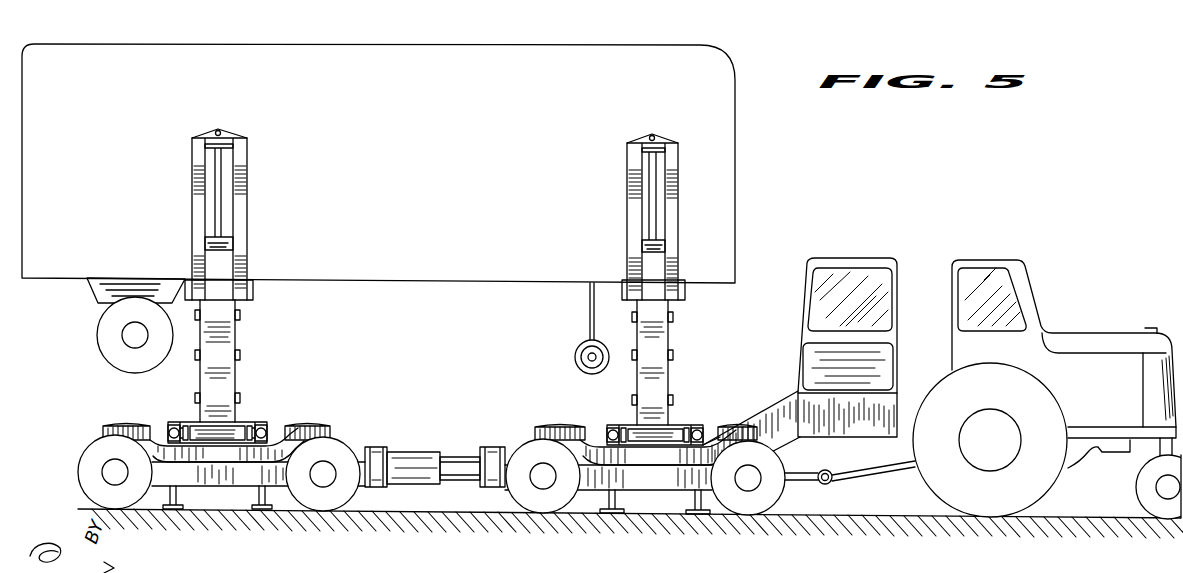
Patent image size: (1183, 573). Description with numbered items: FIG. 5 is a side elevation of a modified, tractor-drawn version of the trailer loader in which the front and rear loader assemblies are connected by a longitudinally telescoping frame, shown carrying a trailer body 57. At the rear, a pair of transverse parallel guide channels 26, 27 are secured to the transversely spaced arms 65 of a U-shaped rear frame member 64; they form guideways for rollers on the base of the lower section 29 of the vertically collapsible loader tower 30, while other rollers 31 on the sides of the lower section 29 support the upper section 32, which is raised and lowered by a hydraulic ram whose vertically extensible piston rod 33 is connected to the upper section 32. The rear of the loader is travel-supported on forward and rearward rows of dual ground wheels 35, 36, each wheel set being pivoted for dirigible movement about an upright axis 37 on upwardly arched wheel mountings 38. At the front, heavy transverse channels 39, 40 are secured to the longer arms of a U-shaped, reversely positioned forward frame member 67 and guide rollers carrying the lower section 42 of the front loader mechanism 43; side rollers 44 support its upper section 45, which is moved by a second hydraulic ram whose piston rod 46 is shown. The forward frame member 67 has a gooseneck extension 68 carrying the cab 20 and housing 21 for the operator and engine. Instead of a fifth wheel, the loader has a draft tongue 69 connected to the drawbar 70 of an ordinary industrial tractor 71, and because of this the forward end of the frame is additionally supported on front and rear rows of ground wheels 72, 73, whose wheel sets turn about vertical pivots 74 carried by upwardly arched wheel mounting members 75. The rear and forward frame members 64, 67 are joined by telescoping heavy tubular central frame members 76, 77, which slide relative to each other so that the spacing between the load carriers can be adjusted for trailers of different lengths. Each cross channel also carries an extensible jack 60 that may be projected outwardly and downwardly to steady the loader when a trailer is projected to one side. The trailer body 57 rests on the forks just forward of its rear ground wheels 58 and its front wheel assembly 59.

The cab 20 is at (855, 260).
The housing 21 is at (880, 343).
The guide channel 26 is at (246, 425).
The guide channel 27 is at (182, 421).
The lower section 29 is at (232, 380).
The loader tower 30 is at (250, 255).
The rollers 31 is at (228, 350).
The upper section 32 is at (245, 213).
The piston rod 33 is at (222, 190).
The ground wheels 35 is at (340, 444).
The ground wheels 36 is at (93, 447).
The upright axis 37 is at (116, 426).
The wheel mountings 38 is at (292, 429).
The channel 39 is at (733, 436).
The channel 40 is at (630, 424).
The lower section 42 is at (668, 383).
The loader mechanism 43 is at (681, 229).
The side rollers 44 is at (674, 355).
The upper section 45 is at (680, 256).
The piston rod 46 is at (655, 206).
The container 57 is at (444, 193).
The rear ground wheels 58 is at (116, 356).
The front wheel assembly 59 is at (575, 357).
The extensible jack 60 is at (262, 497).
The rear frame member 64 is at (386, 444).
The arms 65 is at (698, 514).
The forward frame member 67 is at (492, 445).
The gooseneck extension 68 is at (783, 403).
The draft tongue 69 is at (800, 477).
The drawbar 70 is at (860, 478).
The industrial tractor 71 is at (1076, 332).
The ground wheels 72 is at (773, 515).
The ground wheels 73 is at (553, 514).
The vertical pivots 74 is at (550, 426).
The wheel mounting members 75 is at (586, 444).
The central frame member 76 is at (457, 457).
The central frame member 77 is at (405, 486).